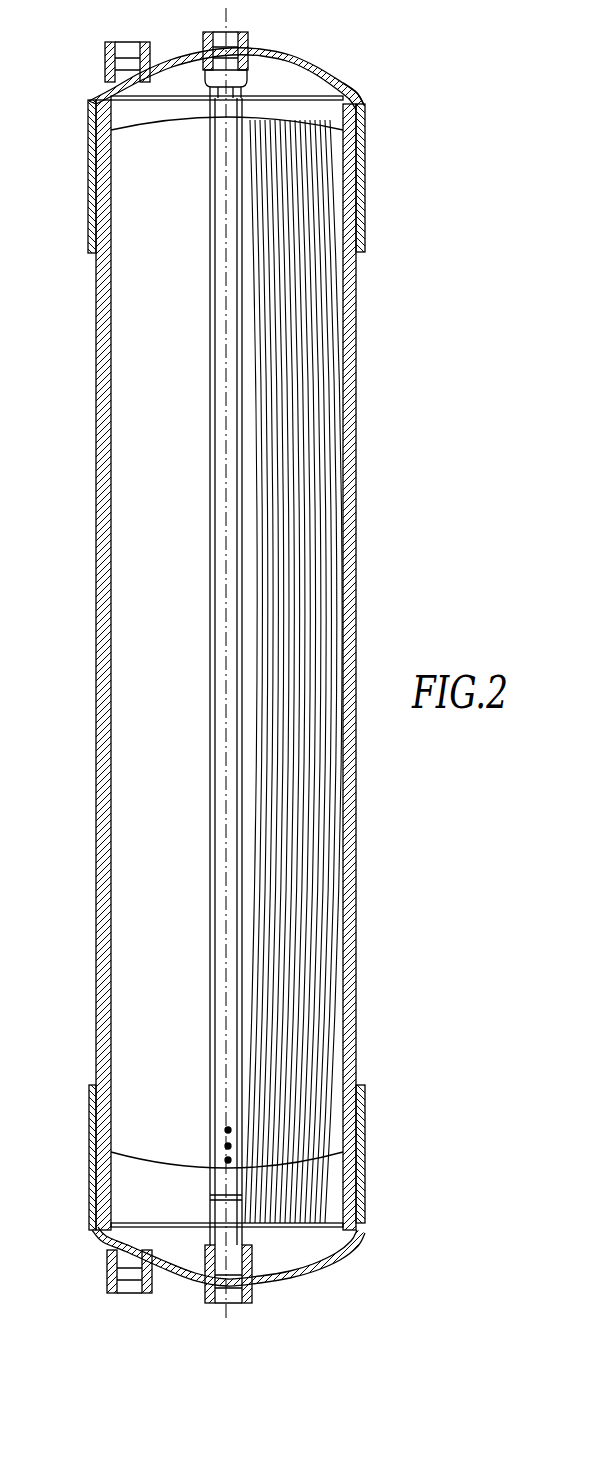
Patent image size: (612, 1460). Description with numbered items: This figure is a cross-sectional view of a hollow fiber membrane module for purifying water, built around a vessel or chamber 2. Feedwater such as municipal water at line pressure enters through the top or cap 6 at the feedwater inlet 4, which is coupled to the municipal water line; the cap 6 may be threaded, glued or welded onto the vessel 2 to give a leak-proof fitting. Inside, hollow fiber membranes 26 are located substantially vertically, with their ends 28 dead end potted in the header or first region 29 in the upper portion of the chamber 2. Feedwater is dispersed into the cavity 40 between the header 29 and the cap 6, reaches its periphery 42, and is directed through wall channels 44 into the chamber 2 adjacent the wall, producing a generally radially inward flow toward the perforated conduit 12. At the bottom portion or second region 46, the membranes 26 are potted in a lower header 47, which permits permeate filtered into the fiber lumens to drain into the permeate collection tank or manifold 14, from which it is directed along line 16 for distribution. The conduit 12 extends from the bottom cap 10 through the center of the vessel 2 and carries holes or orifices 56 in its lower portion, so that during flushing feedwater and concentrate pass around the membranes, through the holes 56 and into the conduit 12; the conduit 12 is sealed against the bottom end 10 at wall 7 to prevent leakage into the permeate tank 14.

The vessel or chamber 2 is at (355, 340).
The feedwater inlet 4 is at (246, 46).
The top or cap 6 is at (320, 72).
The wall 7 is at (240, 1297).
The bottom cap 10 is at (200, 1279).
The perforated conduit 12 is at (207, 746).
The permeate collection tank or manifold 14 is at (305, 1253).
The line 16 is at (125, 1290).
The hollow fiber membranes 26 is at (330, 450).
The ends 28 is at (346, 122).
The header or first region 29 is at (182, 118).
The cavity 40 is at (97, 100).
The periphery 42 is at (350, 84).
The wall channels 44 is at (97, 118).
The bottom portion or second region 46 is at (355, 1160).
The header 47 is at (138, 1158).
The holes or orifices 56 is at (330, 860).